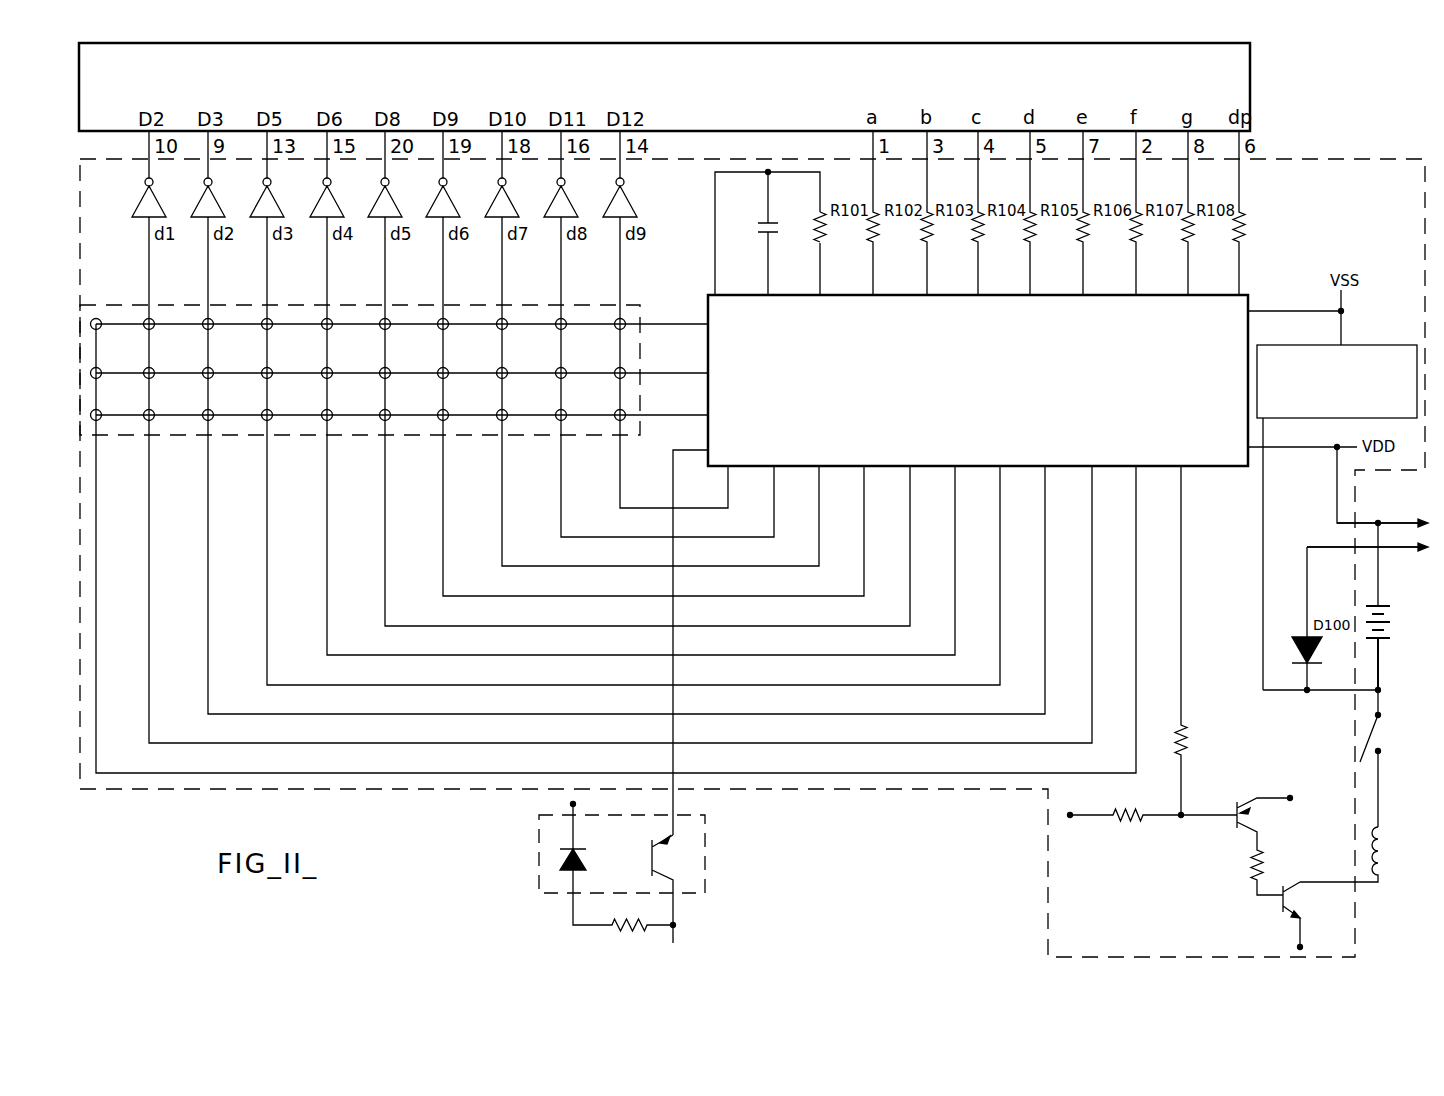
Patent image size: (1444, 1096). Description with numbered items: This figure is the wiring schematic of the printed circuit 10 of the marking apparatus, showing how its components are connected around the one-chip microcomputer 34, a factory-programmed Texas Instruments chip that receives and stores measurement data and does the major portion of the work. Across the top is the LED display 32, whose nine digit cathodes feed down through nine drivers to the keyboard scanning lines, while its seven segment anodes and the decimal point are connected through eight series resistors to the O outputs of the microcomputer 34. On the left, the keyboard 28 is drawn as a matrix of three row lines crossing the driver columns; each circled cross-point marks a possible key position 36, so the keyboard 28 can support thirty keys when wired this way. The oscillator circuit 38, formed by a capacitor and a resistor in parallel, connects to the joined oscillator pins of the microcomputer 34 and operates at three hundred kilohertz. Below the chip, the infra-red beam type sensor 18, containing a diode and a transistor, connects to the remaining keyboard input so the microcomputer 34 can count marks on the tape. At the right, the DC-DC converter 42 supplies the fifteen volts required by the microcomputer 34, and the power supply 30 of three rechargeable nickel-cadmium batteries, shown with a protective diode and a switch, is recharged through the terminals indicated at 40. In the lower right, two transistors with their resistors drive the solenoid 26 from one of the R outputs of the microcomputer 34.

The printed circuit 10 is at (1283, 158).
The infra-red beam type sensor 18 is at (710, 848).
The solenoid 26 is at (1365, 888).
The keyboard 28 is at (128, 262).
The power supply 30 is at (1388, 648).
The LED display 32 is at (722, 99).
The one-chip microcomputer 34 is at (972, 389).
The key 36 is at (321, 362).
The oscillator circuit 38 is at (714, 244).
The recharging connection 40 is at (1408, 520).
The DC-DC converter 42 is at (1366, 318).